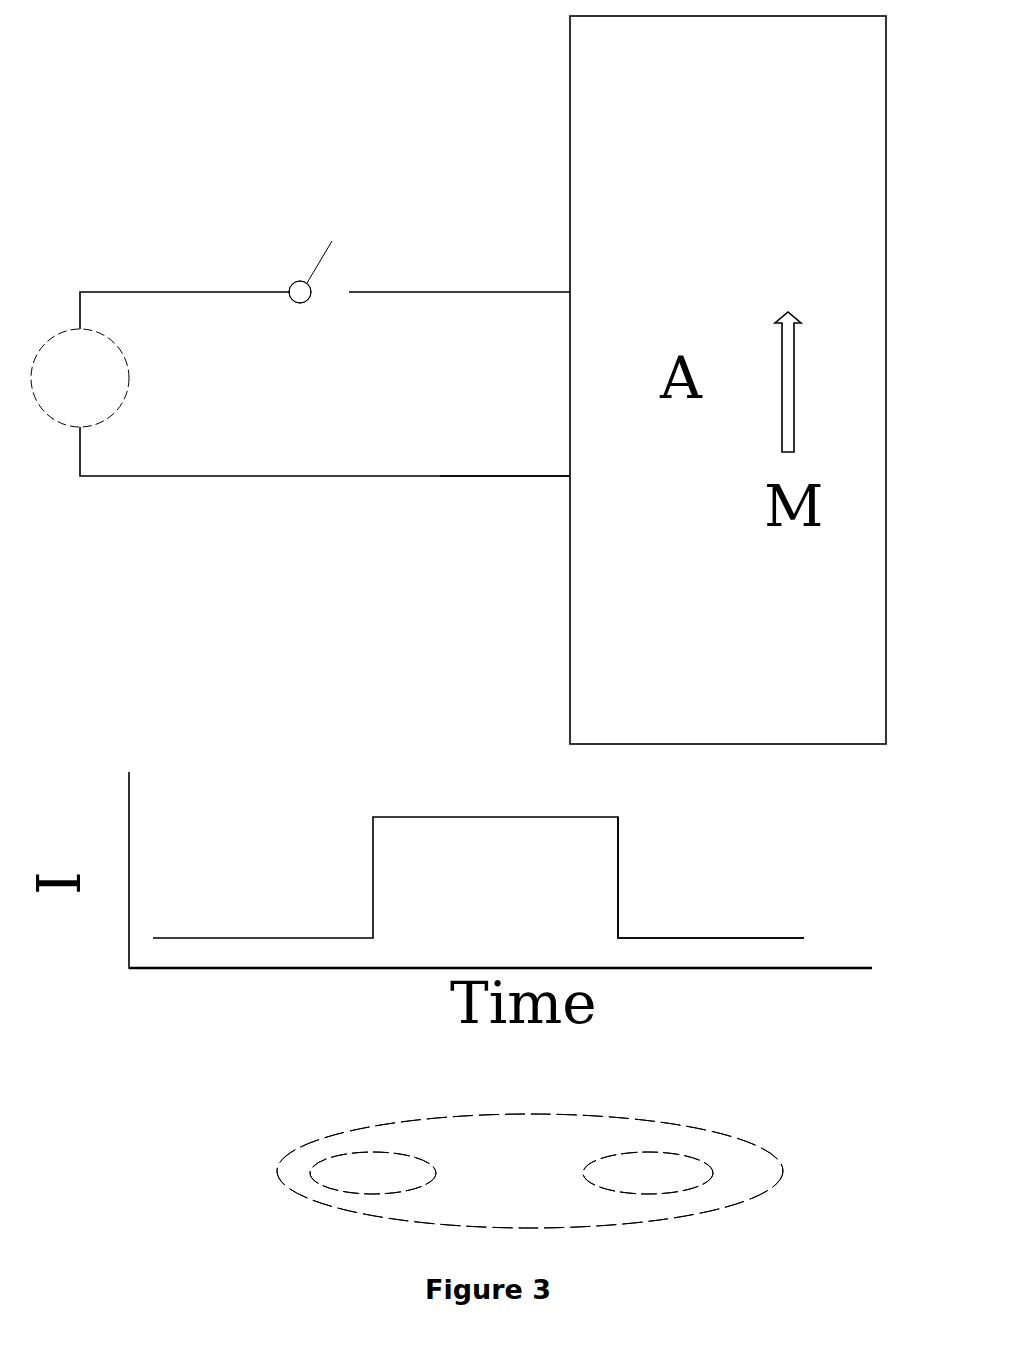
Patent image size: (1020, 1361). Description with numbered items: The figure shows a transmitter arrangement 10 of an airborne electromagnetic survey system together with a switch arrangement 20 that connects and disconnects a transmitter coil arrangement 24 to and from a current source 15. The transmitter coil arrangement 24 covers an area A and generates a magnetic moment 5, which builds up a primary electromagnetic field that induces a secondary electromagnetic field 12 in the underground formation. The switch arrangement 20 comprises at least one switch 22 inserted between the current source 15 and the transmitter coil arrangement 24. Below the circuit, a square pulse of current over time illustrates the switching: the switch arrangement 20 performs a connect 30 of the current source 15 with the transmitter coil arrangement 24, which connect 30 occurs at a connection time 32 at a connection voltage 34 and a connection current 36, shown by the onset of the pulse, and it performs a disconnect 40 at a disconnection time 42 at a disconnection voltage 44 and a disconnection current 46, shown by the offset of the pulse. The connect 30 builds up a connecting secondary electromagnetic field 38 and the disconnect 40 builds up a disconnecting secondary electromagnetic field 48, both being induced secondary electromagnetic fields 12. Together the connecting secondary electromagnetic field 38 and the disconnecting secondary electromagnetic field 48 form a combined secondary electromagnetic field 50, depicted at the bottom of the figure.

The magnetic moment 5 is at (781, 418).
The transmitter arrangement 10 is at (280, 188).
The secondary electromagnetic field 12 is at (255, 1242).
The current source 15 is at (115, 412).
The switch arrangement 20 is at (384, 232).
The switch 22 is at (295, 303).
The transmitter coil arrangement 24 is at (570, 603).
The connect 30 is at (478, 786).
The connection voltage 34 is at (478, 786).
The connection current 36 is at (364, 787).
The disconnect 40 is at (751, 859).
The disconnection voltage 44 is at (751, 859).
The disconnection current 46 is at (652, 858).
The connection time 32 is at (372, 1016).
The connecting secondary electromagnetic field 38 is at (350, 1153).
The disconnection time 42 is at (618, 1000).
The disconnecting secondary electromagnetic field 48 is at (648, 1152).
The combined secondary electromagnetic field 50 is at (523, 1225).